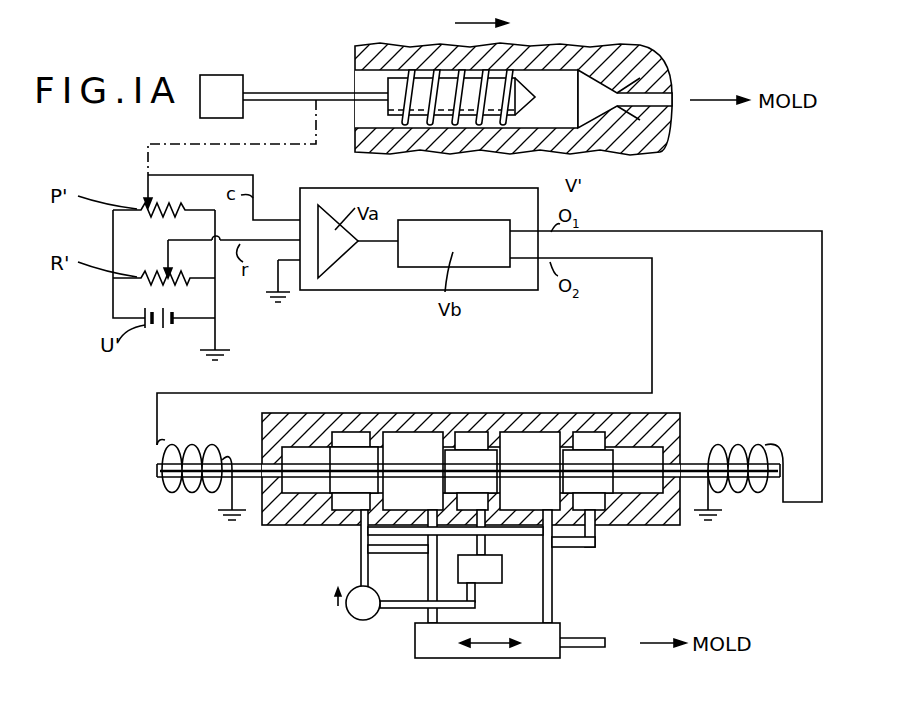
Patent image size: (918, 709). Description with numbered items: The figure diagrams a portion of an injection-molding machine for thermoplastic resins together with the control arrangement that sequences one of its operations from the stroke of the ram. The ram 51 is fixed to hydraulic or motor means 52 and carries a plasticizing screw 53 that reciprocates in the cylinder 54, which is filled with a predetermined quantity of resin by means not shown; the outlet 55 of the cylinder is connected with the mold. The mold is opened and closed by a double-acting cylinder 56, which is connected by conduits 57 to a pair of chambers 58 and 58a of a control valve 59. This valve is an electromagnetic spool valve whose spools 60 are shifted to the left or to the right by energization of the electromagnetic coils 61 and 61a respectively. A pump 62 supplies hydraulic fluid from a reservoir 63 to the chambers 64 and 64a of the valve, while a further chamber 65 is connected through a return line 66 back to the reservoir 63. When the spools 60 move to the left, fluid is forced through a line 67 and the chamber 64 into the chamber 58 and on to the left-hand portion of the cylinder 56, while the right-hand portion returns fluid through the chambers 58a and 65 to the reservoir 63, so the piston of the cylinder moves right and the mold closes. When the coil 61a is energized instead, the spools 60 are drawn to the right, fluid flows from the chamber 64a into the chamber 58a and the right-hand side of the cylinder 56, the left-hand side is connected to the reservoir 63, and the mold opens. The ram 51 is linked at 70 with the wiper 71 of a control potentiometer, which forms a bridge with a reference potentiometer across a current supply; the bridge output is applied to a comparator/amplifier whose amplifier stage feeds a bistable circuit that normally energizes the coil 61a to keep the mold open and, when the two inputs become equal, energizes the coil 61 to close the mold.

The ram 51 is at (278, 92).
The hydraulic or motor means 52 is at (223, 82).
The plasticizing screw 53 is at (393, 88).
The cylinder 54 is at (553, 72).
The outlet 55 is at (638, 100).
The double-acting cylinder 56 is at (455, 660).
The conduits 57 is at (552, 605).
The chamber 58 is at (405, 434).
The chamber 58a is at (533, 434).
The control valve 59 is at (290, 528).
The spools 60 is at (365, 483).
The electromagnetic coil 61 is at (190, 495).
The electromagnetic coil 61a is at (741, 488).
The pump 62 is at (360, 617).
The reservoir 63 is at (488, 580).
The chamber 64 is at (340, 505).
The chamber 64a is at (598, 505).
The further chamber 65 is at (466, 440).
The return line 66 is at (485, 518).
The line 67 is at (368, 562).
The linkage 70 is at (247, 145).
The wiper 71 is at (147, 195).